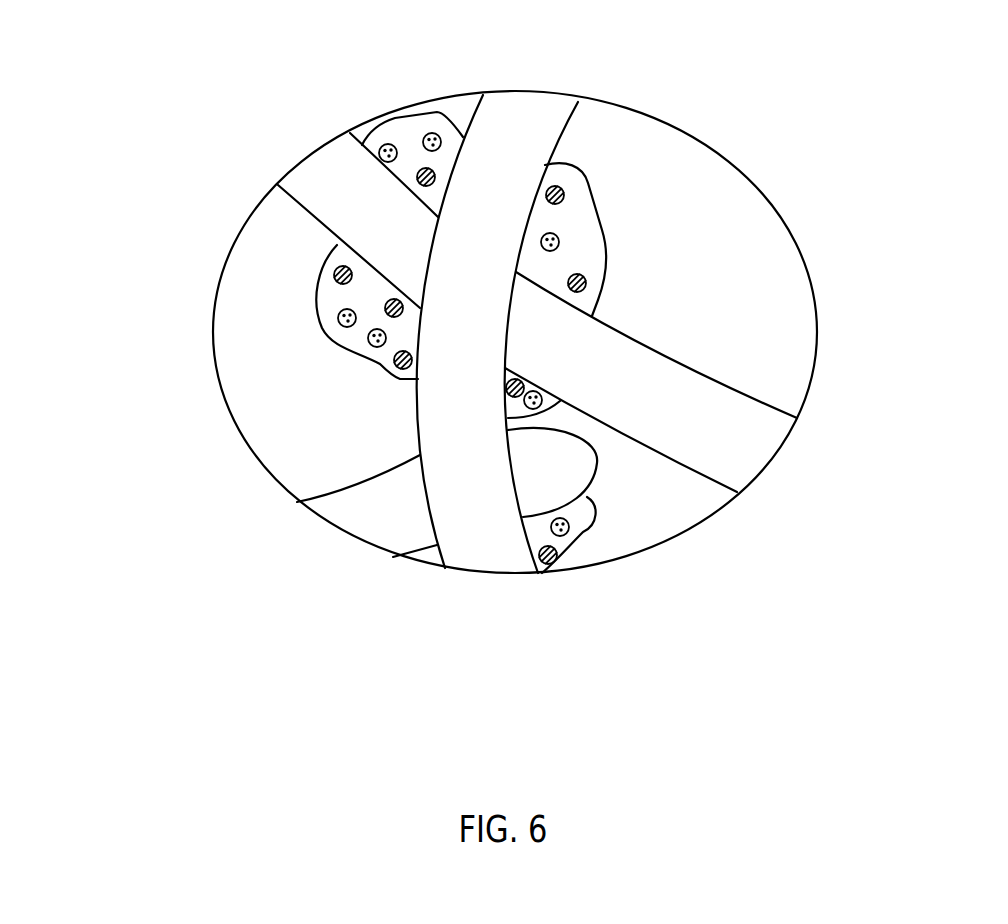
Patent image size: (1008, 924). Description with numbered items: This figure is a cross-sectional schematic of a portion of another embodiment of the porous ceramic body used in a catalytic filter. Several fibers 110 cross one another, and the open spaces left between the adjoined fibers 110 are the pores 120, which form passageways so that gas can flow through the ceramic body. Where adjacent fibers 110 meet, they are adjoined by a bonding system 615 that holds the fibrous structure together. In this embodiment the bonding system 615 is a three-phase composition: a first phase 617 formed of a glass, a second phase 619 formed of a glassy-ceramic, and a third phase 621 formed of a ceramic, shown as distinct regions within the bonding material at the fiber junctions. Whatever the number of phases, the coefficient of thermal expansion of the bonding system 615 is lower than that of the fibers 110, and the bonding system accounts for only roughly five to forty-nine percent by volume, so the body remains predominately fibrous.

The fibers 110 is at (350, 507).
The pores 120 is at (297, 426).
The bonding system 615 is at (400, 130).
The first phase 617 is at (318, 307).
The second phase 619 is at (335, 272).
The third phase 621 is at (338, 320).